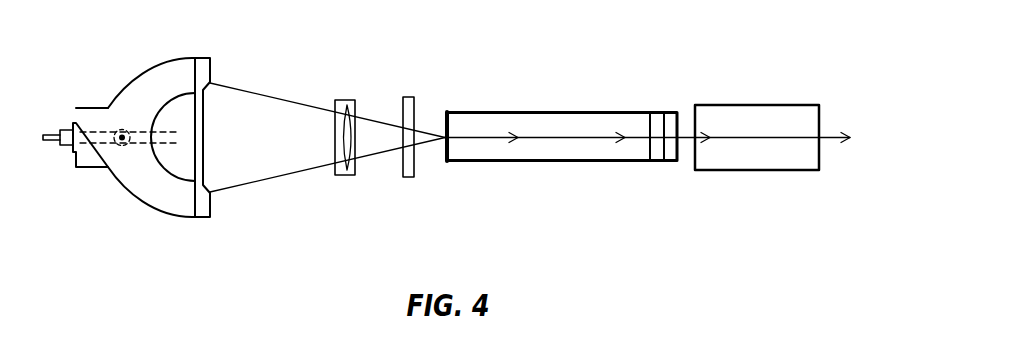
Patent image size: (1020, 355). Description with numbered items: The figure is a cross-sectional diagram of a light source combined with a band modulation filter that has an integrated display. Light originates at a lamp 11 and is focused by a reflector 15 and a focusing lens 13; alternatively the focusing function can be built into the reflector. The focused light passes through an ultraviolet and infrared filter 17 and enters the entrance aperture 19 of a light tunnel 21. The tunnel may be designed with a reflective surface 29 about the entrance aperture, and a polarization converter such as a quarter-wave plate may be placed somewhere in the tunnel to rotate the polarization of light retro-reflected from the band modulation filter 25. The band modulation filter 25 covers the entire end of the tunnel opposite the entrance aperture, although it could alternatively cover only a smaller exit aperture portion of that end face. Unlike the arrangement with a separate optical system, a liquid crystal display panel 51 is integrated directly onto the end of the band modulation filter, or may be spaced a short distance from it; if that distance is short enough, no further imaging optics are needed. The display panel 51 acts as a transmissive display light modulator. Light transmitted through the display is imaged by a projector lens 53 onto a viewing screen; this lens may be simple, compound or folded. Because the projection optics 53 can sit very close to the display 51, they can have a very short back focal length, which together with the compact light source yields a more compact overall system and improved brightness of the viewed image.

The lamp 11 is at (126, 147).
The reflector 15 is at (137, 82).
The focusing lens 13 is at (345, 100).
The ultraviolet and infrared filter 17 is at (412, 97).
The entrance aperture 19 is at (445, 140).
The light tunnel 21 is at (544, 112).
The reflective surface 29 is at (450, 160).
The band modulation filter 25 is at (657, 163).
The liquid crystal display panel 51 is at (672, 163).
The projector lens 53 is at (765, 105).